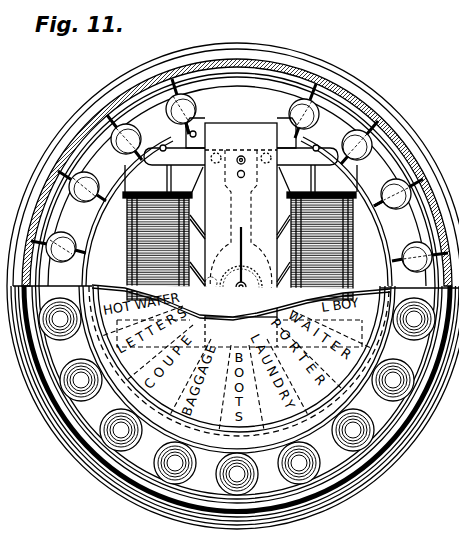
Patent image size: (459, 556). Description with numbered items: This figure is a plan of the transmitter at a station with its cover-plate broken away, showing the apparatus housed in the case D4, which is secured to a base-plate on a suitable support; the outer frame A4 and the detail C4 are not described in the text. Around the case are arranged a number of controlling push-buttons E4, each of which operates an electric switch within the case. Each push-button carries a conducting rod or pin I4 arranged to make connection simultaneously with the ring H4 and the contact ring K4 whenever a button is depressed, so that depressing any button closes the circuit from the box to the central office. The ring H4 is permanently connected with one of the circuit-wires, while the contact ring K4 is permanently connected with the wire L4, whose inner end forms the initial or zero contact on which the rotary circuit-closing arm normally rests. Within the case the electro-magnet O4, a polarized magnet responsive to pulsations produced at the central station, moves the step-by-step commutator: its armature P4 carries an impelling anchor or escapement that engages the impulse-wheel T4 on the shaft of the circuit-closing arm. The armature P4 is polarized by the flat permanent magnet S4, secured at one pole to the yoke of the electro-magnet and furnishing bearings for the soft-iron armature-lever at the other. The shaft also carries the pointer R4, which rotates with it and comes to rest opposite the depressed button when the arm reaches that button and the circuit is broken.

The casing A4 is at (233, 286).
The case D4 is at (267, 60).
The ring H4 is at (208, 72).
The rods or pins I4 is at (177, 74).
The push-buttons E4 is at (192, 107).
The contact ring K4 is at (177, 137).
The wire L4 is at (200, 126).
The armature P4 is at (190, 155).
The flat permanent magnet S4 is at (245, 127).
The guide C4 is at (200, 188).
The impulse-wheel T4 is at (229, 263).
The pointer R4 is at (243, 244).
The electro-magnet O4 is at (239, 246).